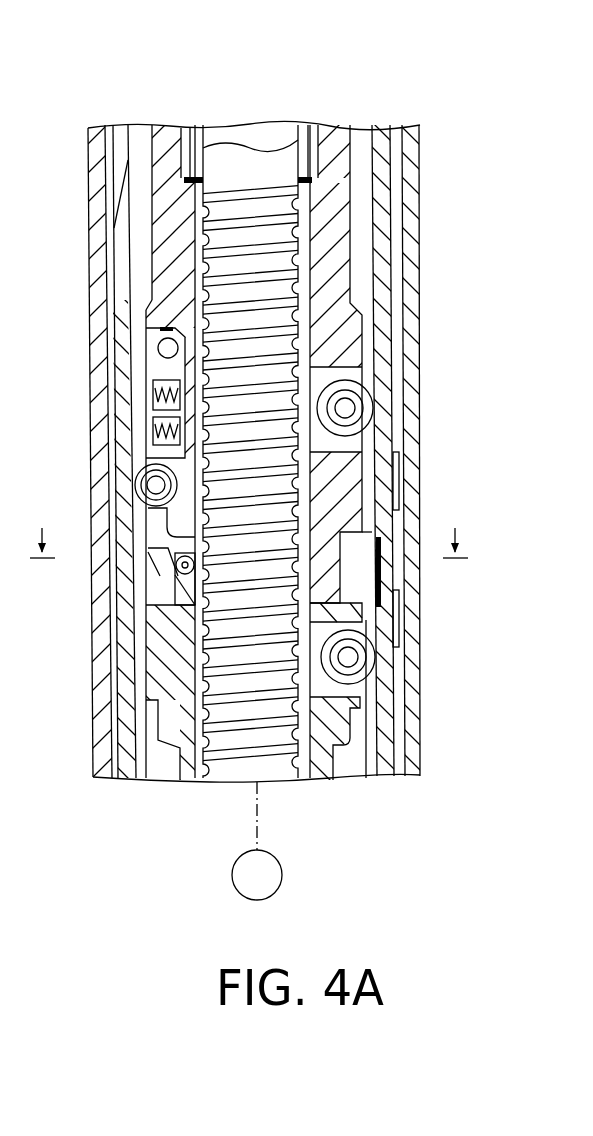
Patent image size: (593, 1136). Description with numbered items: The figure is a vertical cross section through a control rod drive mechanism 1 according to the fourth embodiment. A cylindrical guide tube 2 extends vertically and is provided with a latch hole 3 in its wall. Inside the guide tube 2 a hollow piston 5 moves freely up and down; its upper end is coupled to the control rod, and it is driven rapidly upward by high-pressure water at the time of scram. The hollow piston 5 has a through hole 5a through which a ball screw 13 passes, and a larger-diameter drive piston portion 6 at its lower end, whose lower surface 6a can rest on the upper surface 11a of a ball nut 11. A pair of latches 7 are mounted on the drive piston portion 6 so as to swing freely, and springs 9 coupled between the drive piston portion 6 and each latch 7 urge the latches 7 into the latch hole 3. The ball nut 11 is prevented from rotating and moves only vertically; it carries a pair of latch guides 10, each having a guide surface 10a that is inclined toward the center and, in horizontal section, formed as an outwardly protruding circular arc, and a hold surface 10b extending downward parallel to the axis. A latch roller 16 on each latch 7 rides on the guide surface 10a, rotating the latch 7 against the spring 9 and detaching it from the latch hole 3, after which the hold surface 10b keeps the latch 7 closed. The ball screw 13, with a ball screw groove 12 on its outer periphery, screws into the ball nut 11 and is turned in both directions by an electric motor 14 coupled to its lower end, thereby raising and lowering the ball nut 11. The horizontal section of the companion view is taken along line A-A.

The control rod drive mechanism 1 is at (400, 84).
The guide tube 2 is at (127, 708).
The latch hole 3 is at (122, 291).
The hollow piston 5 is at (150, 223).
The through hole 5a is at (197, 208).
The drive piston portion 6 is at (342, 345).
The lower surface 6a is at (357, 625).
The latch 7 is at (148, 455).
The spring 9 is at (153, 428).
The latch guide 10 is at (168, 600).
The guide surface 10a is at (160, 545).
The hold surface 10b is at (175, 590).
The ball nut 11 is at (172, 747).
The upper surface 11a is at (345, 595).
The ball screw groove 12 is at (334, 742).
The ball screw 13 is at (238, 777).
The electric motor 14 is at (282, 872).
The latch roller 16 is at (175, 562).
The line A- A is at (249, 526).